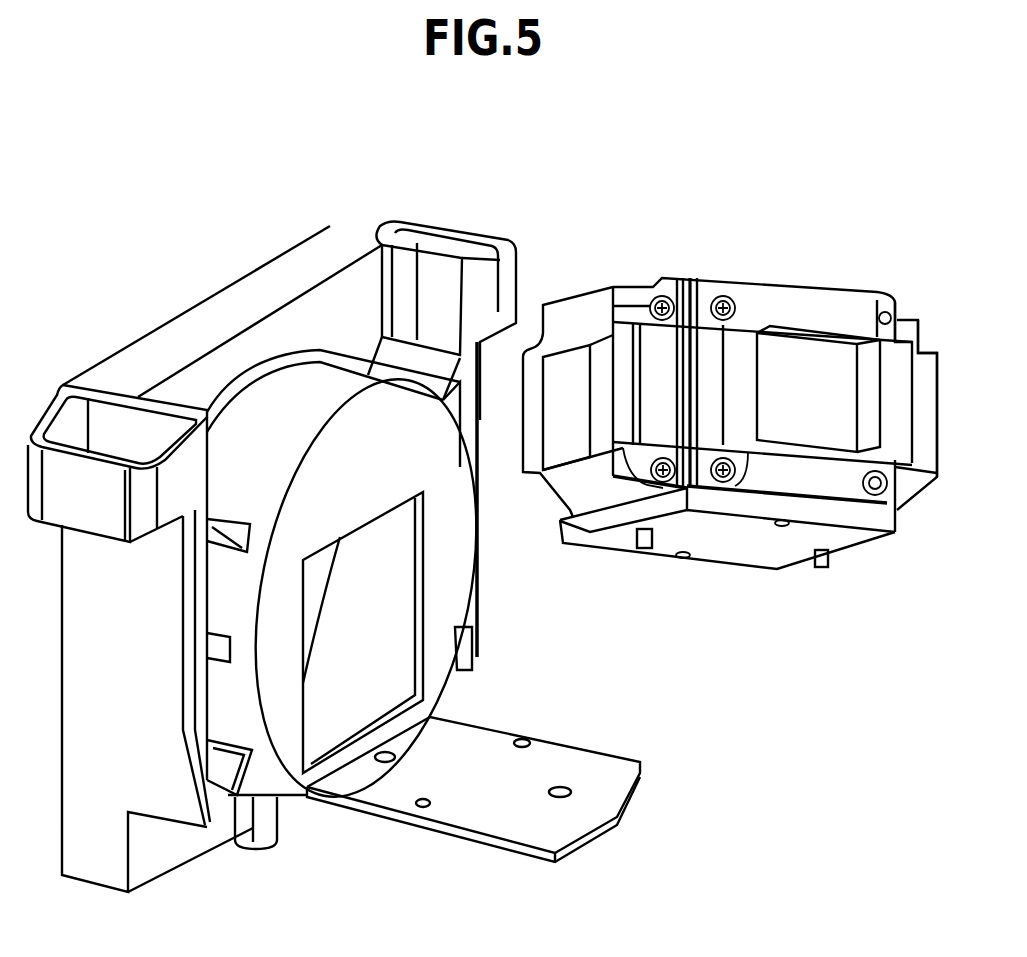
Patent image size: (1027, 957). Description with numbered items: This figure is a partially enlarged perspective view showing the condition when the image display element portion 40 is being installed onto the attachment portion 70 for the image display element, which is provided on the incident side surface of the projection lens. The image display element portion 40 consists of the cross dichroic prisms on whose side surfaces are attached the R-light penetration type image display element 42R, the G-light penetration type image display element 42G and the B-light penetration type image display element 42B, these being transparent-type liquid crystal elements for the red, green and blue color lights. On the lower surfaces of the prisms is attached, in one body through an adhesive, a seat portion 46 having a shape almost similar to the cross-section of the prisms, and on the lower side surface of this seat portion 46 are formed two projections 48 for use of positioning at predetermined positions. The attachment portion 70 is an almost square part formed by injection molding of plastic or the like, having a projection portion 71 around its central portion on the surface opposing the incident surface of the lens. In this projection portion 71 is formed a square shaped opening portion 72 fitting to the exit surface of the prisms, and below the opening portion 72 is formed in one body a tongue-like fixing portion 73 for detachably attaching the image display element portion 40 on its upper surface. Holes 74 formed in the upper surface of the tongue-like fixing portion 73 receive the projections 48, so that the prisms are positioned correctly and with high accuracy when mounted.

The image display element portion 40 is at (737, 274).
The R-light penetration type image display element 42R is at (607, 383).
The G-light penetration type image display element 42G is at (807, 383).
The B-light penetration type image display element 42B is at (923, 455).
The seat portion 46 is at (617, 537).
The projections for use of positioning 48 is at (822, 568).
The attachment portion for the image display element 70 is at (253, 288).
The projection portion 71 is at (397, 433).
The square shaped opening portion 72 is at (390, 640).
The tongue-like fixing portion 73 is at (492, 806).
The holes 74 is at (521, 740).